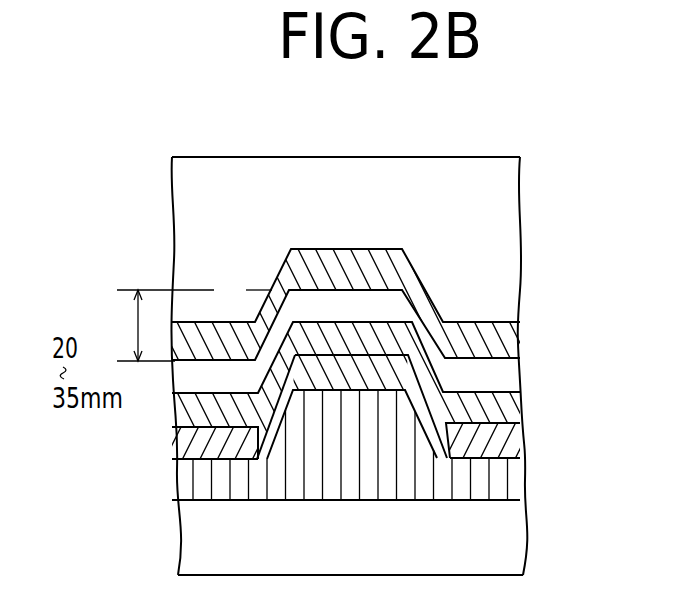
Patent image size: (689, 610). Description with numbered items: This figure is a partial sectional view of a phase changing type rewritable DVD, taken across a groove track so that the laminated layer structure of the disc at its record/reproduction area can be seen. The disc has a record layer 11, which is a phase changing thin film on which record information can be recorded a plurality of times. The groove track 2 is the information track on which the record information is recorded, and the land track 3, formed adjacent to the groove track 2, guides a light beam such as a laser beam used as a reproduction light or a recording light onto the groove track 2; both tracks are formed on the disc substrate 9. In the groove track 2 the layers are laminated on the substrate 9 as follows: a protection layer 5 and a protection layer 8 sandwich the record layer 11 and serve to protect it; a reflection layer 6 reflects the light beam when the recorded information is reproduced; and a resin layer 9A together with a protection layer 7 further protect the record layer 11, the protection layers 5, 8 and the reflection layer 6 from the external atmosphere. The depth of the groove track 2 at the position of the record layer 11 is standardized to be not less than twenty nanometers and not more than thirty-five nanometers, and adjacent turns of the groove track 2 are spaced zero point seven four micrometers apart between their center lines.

The groove track 2 is at (377, 248).
The land track 3 is at (232, 322).
The protection layer 5 is at (510, 337).
The reflection layer 6 is at (522, 442).
The protection layer 7 is at (513, 256).
The protection layer 8 is at (512, 415).
The disc substrate 9 is at (513, 550).
The resin layer 9A is at (510, 487).
The record layer 11 is at (510, 373).